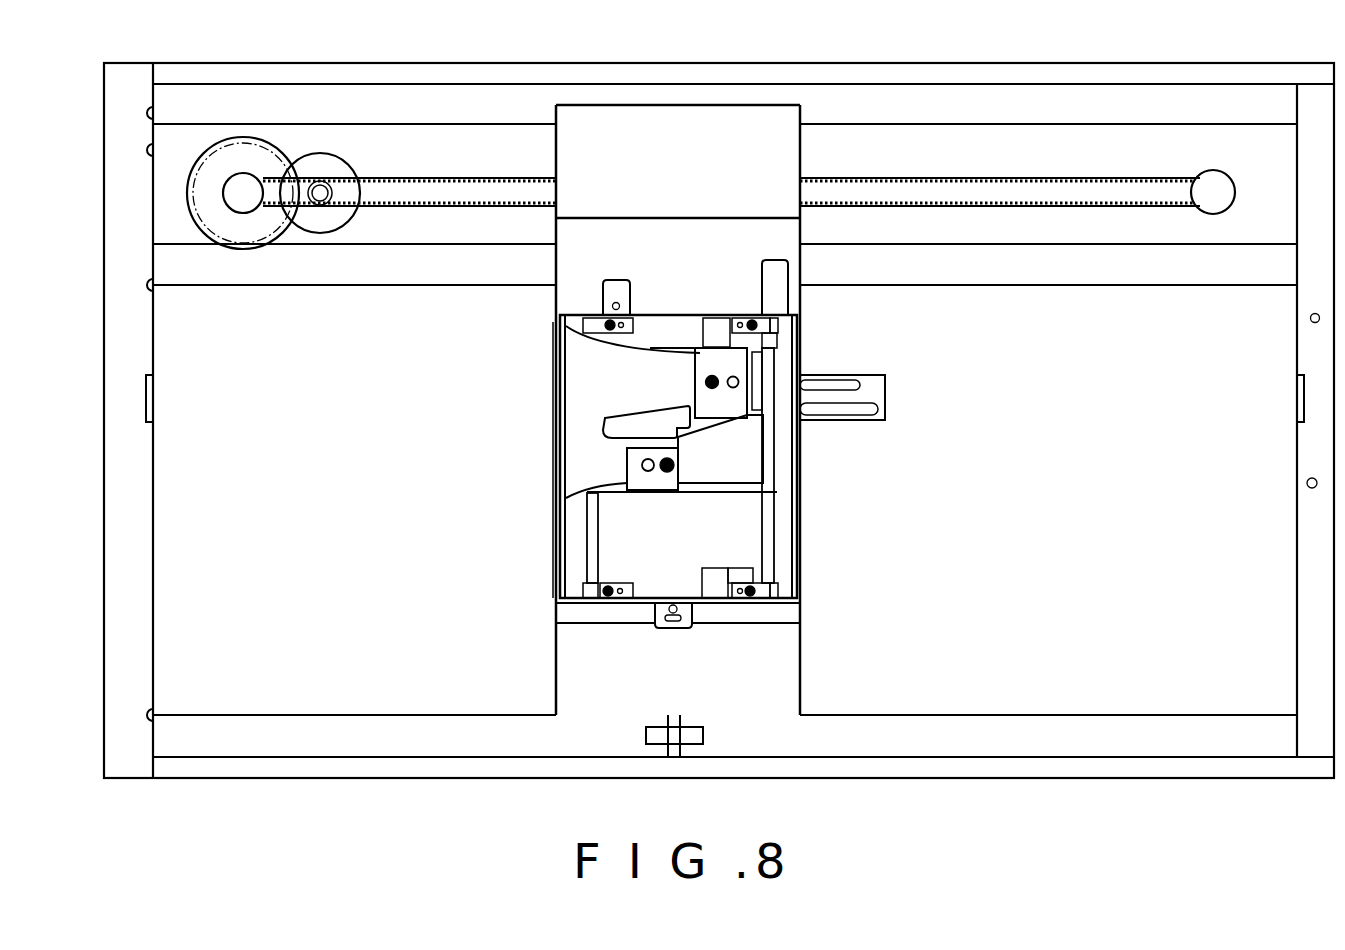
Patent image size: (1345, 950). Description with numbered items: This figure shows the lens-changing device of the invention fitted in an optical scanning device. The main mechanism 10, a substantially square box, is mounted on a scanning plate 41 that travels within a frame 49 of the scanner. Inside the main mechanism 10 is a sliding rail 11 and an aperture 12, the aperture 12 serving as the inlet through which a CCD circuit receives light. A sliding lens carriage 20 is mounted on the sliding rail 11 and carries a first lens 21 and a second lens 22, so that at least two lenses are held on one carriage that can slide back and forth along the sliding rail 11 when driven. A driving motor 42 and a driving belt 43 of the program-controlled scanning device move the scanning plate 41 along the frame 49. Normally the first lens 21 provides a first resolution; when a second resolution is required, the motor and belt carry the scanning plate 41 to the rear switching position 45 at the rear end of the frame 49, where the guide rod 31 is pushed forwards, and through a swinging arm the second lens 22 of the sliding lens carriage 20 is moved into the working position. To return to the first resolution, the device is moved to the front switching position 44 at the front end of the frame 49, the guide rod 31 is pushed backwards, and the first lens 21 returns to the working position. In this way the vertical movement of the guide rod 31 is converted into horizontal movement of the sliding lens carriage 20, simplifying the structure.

The main mechanism 10 is at (557, 549).
The sliding rail 11 is at (588, 570).
The aperture 12 is at (794, 503).
The sliding lens carriage 20 is at (565, 394).
The first lens 21 is at (674, 460).
The second lens 22 is at (737, 408).
The guide rod 31 is at (885, 385).
The scanning plate 41 is at (792, 233).
The driving motor 42 is at (249, 145).
The driving belt 43 is at (450, 190).
The front switching position 44 is at (155, 398).
The rear switching position 45 is at (1295, 395).
The frame 49 is at (1101, 778).